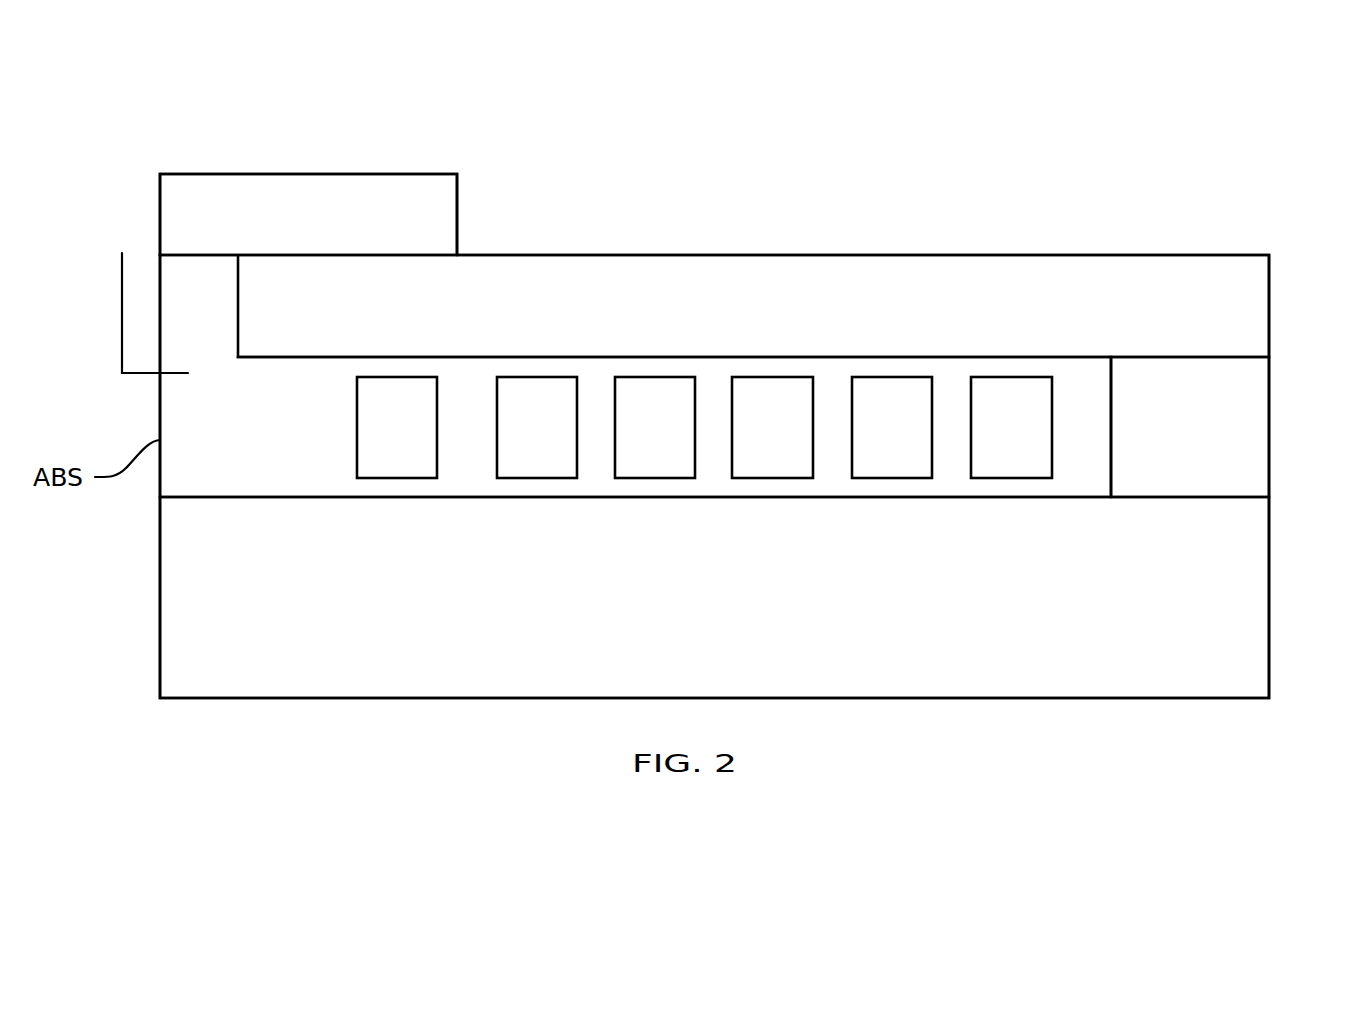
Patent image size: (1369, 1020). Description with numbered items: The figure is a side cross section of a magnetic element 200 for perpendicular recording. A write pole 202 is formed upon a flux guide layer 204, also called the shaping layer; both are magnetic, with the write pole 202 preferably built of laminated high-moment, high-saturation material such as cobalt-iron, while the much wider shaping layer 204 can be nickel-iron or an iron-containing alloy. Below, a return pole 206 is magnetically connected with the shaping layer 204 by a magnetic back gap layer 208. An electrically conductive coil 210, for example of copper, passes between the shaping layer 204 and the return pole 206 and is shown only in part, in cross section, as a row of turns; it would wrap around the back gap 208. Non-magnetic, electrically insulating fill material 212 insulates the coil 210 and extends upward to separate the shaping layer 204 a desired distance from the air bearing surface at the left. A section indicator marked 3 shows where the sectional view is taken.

The magnetic element 200 is at (895, 175).
The write pole 202 is at (308, 195).
The flux guide layer 204 is at (610, 287).
The return pole 206 is at (1025, 633).
The back gap layer 208 is at (1225, 418).
The coil 210 is at (753, 480).
The fill material 212 is at (200, 444).
The section line for FIG. 3 is at (198, 373).